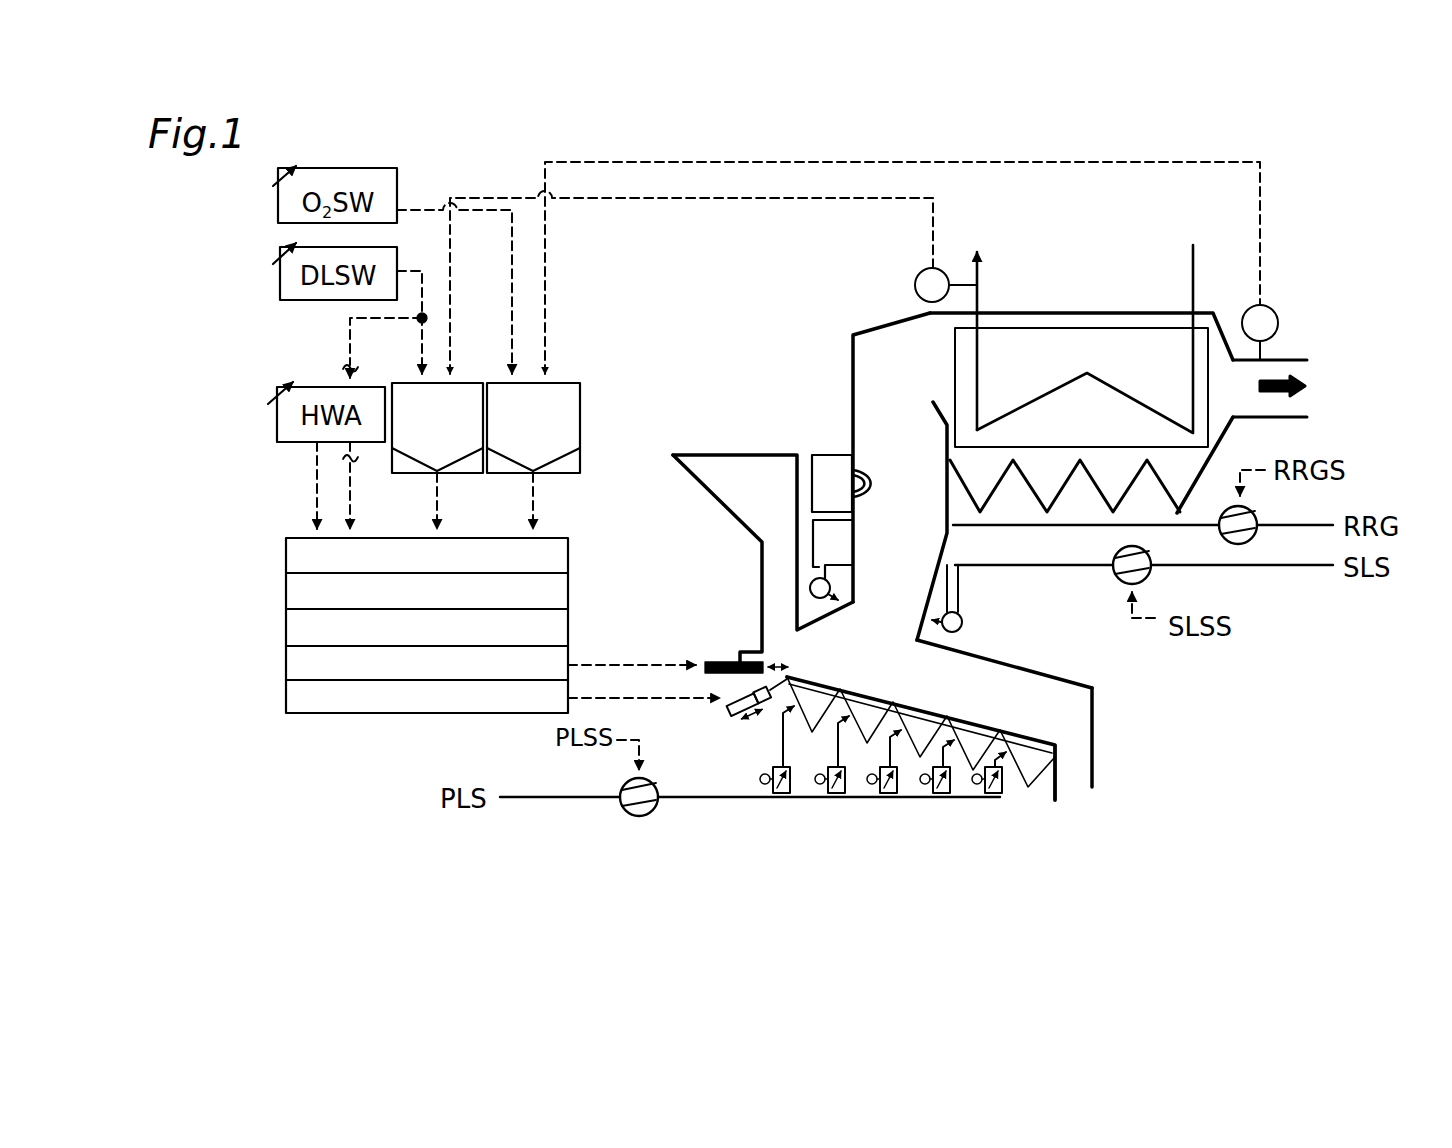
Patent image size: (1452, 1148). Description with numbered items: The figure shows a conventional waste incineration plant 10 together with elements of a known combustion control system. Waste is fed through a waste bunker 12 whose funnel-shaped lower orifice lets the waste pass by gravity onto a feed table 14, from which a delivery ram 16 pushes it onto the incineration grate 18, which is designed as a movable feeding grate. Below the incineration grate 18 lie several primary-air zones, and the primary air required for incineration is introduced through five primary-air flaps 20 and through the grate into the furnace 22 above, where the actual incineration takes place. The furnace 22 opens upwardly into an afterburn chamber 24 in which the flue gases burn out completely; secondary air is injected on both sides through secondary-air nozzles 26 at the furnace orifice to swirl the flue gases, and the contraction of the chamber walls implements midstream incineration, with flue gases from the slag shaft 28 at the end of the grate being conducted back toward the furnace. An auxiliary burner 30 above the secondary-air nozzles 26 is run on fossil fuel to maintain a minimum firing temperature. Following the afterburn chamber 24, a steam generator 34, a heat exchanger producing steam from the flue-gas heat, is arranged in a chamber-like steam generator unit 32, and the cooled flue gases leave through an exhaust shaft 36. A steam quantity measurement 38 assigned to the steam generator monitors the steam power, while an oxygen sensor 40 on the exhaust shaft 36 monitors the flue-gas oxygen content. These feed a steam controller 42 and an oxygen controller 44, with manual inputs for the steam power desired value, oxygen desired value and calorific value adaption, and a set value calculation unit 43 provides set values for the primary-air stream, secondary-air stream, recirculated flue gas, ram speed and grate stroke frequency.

The waste incineration plant 10 is at (1345, 240).
The waste bunker 12 is at (713, 445).
The feed table 14 is at (766, 660).
The delivery ram 16 is at (722, 658).
The incineration grate 18 is at (942, 706).
The primary-air flaps 20 is at (765, 795).
The furnace 22 is at (870, 661).
The afterburn chamber 24 is at (910, 485).
The secondary-air nozzles 26 is at (810, 584).
The slag shaft 28 is at (1072, 767).
The auxiliary burner 30 is at (831, 449).
The steam generator unit 32 is at (1053, 315).
The steam generator 34 is at (1103, 328).
The exhaust shaft 36 is at (1280, 373).
The steam quantity measurement 38 is at (918, 283).
The oxygen sensor 40 is at (1262, 304).
The steam controller 42 is at (437, 428).
The set value calculation unit 43 is at (286, 556).
The oxygen controller 44 is at (533, 428).